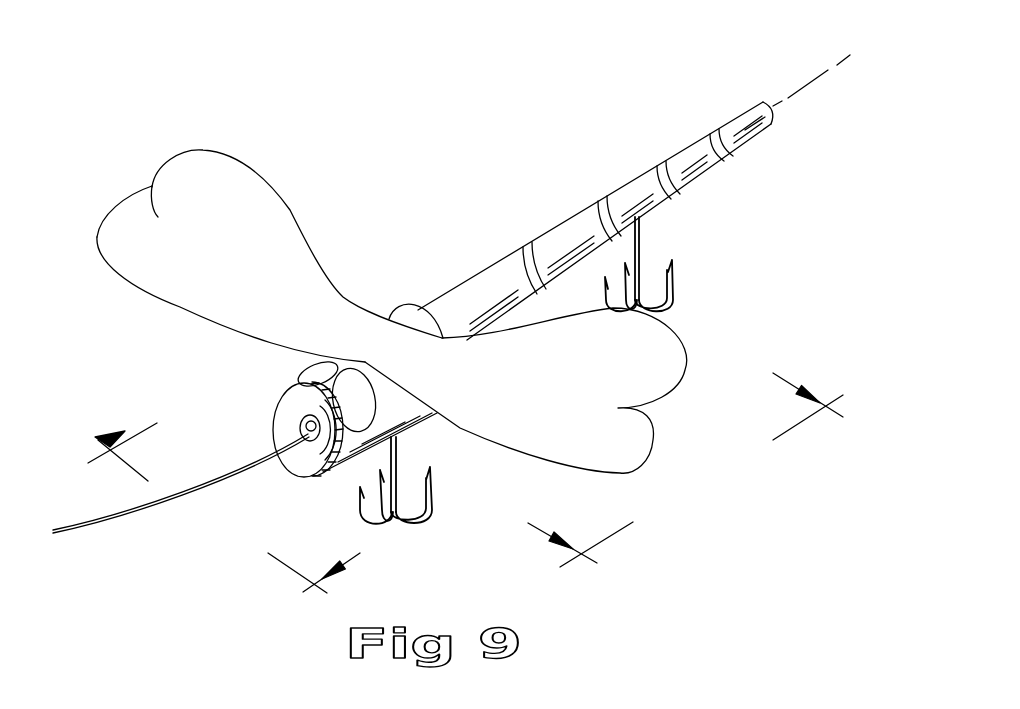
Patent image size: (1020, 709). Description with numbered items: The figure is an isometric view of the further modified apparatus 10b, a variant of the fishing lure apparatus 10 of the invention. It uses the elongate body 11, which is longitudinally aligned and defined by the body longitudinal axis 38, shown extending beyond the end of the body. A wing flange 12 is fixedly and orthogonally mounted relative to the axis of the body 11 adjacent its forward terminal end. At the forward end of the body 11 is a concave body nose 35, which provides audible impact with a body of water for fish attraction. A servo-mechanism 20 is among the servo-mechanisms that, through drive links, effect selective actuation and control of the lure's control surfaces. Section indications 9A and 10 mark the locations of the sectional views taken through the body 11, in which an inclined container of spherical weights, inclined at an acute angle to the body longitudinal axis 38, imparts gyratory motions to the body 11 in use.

The further modified apparatus 10b is at (526, 160).
The elongate body 11 is at (448, 305).
The wing flange 12 is at (658, 372).
The second servo-mechanism 20 is at (640, 246).
The concave body nose 35 is at (308, 460).
The body longitudinal axis 38 is at (808, 83).
The section line 9A- 9A is at (203, 517).
The fishing lure apparatus 10 is at (694, 485).